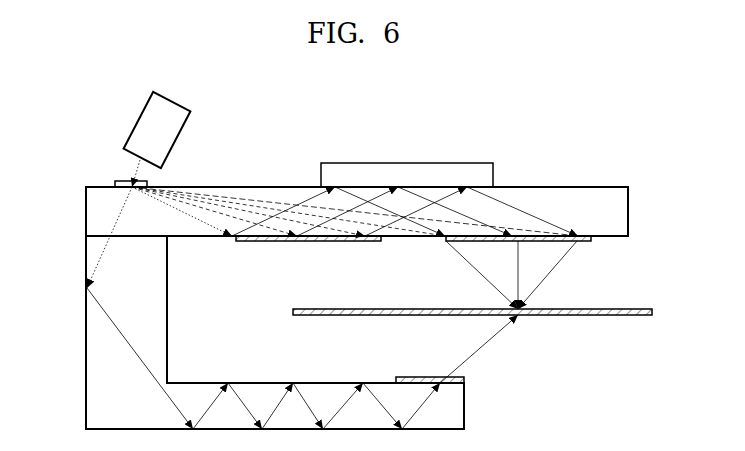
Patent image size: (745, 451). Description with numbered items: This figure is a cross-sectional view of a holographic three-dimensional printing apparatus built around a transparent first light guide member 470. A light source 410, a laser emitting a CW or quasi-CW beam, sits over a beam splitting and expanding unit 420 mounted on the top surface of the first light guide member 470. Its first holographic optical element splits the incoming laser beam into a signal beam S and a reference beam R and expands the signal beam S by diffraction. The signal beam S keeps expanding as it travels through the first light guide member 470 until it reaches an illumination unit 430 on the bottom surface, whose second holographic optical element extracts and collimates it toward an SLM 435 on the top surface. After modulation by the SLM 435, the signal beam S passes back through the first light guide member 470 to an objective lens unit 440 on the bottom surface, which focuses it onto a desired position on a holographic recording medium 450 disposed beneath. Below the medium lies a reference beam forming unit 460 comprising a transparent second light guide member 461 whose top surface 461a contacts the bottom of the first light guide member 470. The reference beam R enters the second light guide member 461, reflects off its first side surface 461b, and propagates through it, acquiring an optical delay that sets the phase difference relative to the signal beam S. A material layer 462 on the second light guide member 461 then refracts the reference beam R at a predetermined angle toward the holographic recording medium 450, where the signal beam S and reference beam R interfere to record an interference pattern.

The light source 410 is at (143, 115).
The beam splitting and expanding unit 420 is at (115, 181).
The illumination unit 430 is at (363, 243).
The SLM 435 is at (495, 165).
The objective lens unit 440 is at (590, 243).
The holographic recording medium 450 is at (627, 315).
The reference beam forming unit 460 is at (286, 314).
The second light guide member 461 is at (457, 415).
The top surface of a first side of the second light guide member 461a is at (97, 233).
The first side surface of the second light guide member 461b is at (86, 347).
The material layer 462 is at (412, 375).
The first light guide member 470 is at (628, 213).
The signal beam S is at (222, 205).
The reference beam R is at (100, 258).